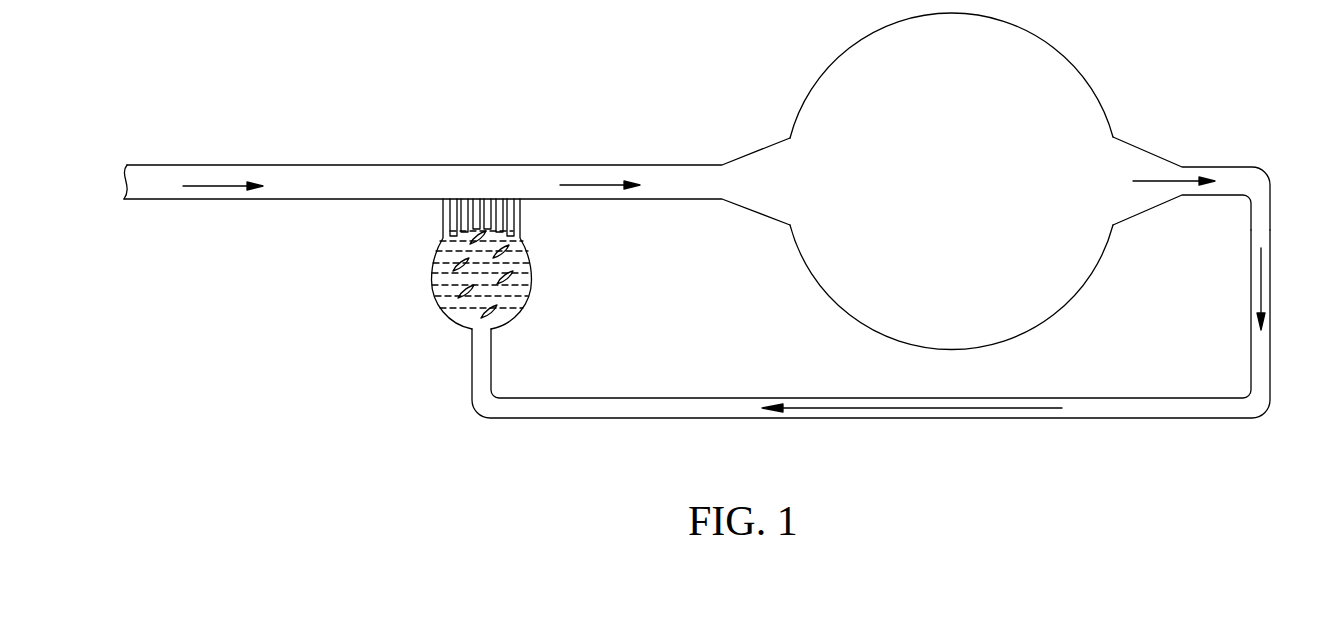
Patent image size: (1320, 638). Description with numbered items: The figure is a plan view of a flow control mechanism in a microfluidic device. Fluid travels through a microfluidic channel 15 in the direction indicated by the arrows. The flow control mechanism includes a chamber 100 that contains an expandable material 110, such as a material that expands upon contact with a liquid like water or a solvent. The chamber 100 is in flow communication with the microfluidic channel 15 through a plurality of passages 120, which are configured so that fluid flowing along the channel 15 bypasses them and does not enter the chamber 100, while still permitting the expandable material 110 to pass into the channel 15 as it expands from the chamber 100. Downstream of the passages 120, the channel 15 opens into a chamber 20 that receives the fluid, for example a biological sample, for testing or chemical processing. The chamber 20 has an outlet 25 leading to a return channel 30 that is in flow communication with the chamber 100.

The microfluidic channel 15 is at (318, 165).
The chamber 20 is at (1080, 293).
The outlet 25 is at (1143, 147).
The return channel 30 is at (1110, 418).
The chamber 100 is at (450, 318).
The expandable material 110 is at (455, 268).
The passages 120 is at (444, 217).